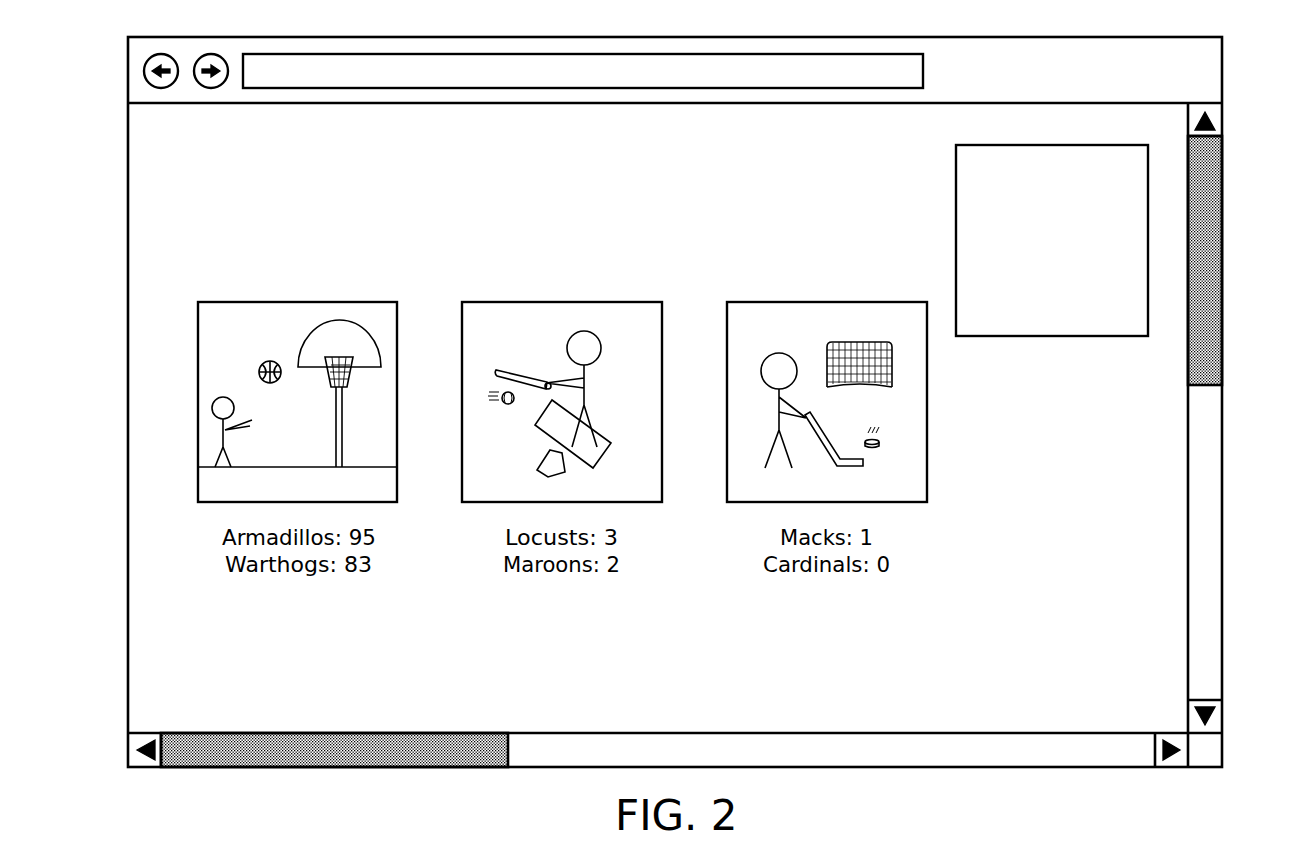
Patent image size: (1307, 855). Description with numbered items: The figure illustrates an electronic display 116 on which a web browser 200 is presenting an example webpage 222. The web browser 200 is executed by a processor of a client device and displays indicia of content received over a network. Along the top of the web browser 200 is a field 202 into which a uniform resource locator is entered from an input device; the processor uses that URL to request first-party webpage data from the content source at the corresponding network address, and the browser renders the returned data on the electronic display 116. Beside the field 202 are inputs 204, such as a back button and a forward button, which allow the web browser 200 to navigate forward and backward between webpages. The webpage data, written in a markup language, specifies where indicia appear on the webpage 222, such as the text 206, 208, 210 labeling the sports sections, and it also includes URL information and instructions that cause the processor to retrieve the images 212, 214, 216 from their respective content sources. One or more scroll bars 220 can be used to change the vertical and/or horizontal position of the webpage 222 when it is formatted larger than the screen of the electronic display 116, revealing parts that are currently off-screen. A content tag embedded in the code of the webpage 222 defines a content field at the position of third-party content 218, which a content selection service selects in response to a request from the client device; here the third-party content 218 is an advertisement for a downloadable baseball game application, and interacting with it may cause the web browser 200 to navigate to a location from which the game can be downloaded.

The web browser 200 is at (130, 52).
The field 202 is at (520, 54).
The inputs 204 is at (160, 53).
The electronic display 116 is at (128, 190).
The webpage 222 is at (145, 247).
The text 206 is at (242, 278).
The text 208 is at (505, 277).
The text 210 is at (786, 277).
The image 212 is at (423, 327).
The image 214 is at (687, 326).
The image 216 is at (928, 479).
The third-party content 218 is at (956, 217).
The scroll bars 220 is at (1225, 245).